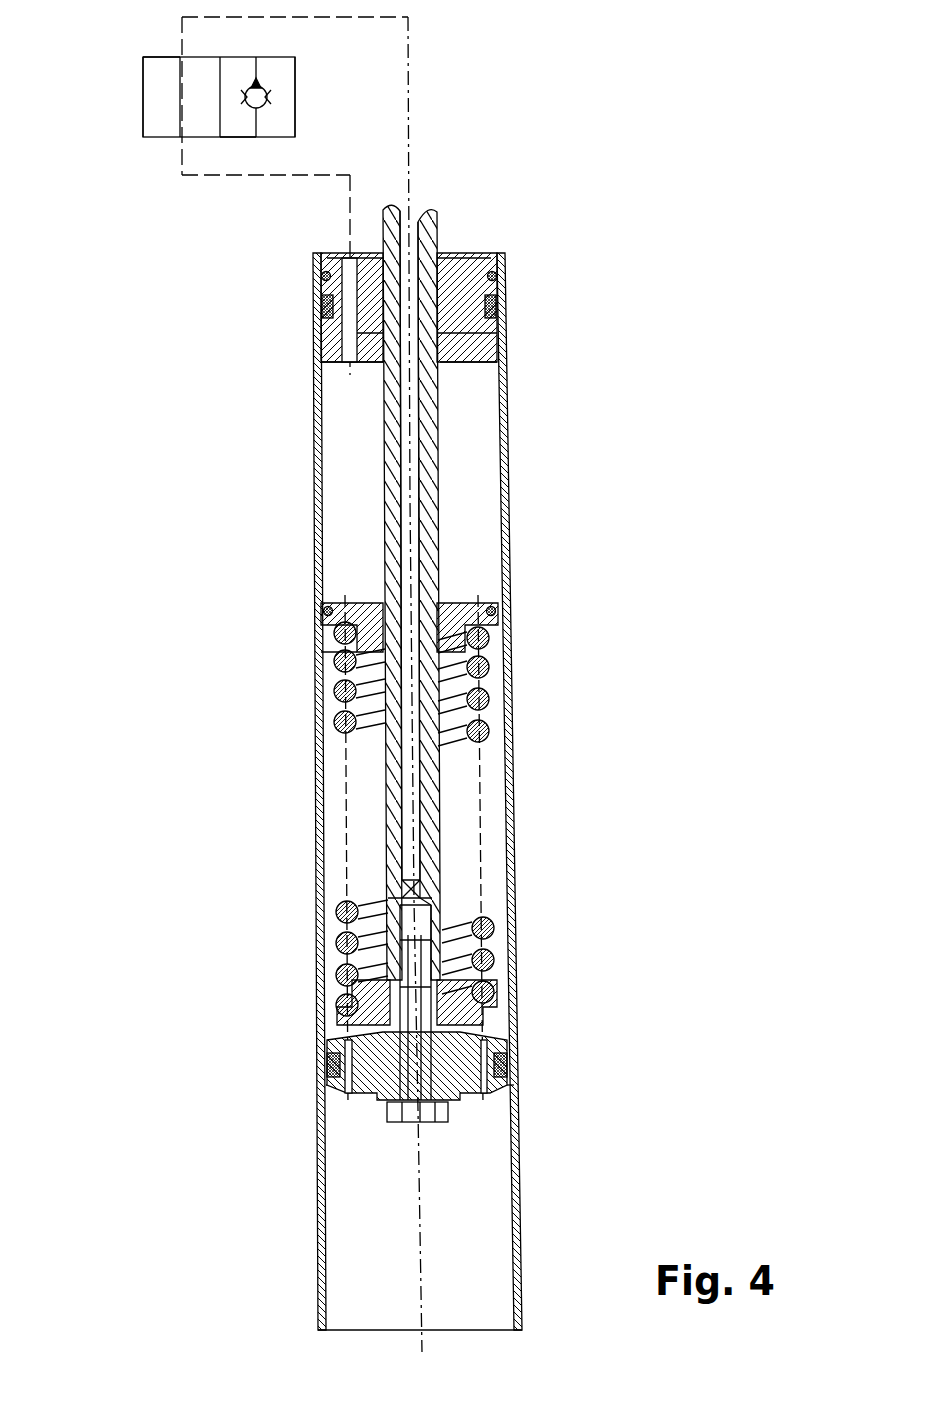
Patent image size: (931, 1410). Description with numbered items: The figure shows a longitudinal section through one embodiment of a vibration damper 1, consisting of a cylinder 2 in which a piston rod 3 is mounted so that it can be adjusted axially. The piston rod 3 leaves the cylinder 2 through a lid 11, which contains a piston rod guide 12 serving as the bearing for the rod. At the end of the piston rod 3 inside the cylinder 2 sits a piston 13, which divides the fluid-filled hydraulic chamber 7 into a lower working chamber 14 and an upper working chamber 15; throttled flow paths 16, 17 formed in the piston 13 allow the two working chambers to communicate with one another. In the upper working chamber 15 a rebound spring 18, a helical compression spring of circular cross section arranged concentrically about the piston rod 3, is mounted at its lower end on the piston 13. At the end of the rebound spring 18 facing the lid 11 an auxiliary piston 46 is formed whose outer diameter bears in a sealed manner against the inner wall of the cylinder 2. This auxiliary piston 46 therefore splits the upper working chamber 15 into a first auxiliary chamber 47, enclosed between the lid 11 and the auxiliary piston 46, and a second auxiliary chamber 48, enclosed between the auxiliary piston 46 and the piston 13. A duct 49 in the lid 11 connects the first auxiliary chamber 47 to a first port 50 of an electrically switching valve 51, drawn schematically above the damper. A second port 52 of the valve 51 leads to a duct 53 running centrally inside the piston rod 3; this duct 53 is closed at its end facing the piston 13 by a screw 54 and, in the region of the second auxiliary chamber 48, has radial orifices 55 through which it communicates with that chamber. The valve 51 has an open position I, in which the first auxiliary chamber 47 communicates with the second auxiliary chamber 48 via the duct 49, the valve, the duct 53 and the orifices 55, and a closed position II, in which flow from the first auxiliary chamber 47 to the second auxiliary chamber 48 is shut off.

The vibration damper 1 is at (538, 224).
The cylinder 2 is at (313, 576).
The piston rod 3 is at (388, 410).
The hydraulic chamber 7 is at (461, 1247).
The lid 11 is at (505, 282).
The piston rod guide 12 is at (500, 337).
The piston 13 is at (358, 1105).
The lower working chamber 14 is at (465, 1175).
The upper working chamber 15 is at (468, 535).
The throttled flow path 16 is at (505, 1043).
The throttled flow path 17 is at (330, 1043).
The rebound spring 18 is at (491, 691).
The auxiliary piston 46 is at (340, 632).
The first auxiliary chamber 47 is at (349, 482).
The second auxiliary chamber 48 is at (355, 823).
The duct 49 is at (322, 284).
The first port 50 is at (180, 140).
The electrically switching valve 51 is at (224, 138).
The second port 52 is at (182, 57).
The duct 53 is at (428, 200).
The screw 54 is at (392, 1125).
The radial orifices 55 is at (418, 898).
The open position I is at (160, 103).
The closed position II is at (286, 100).